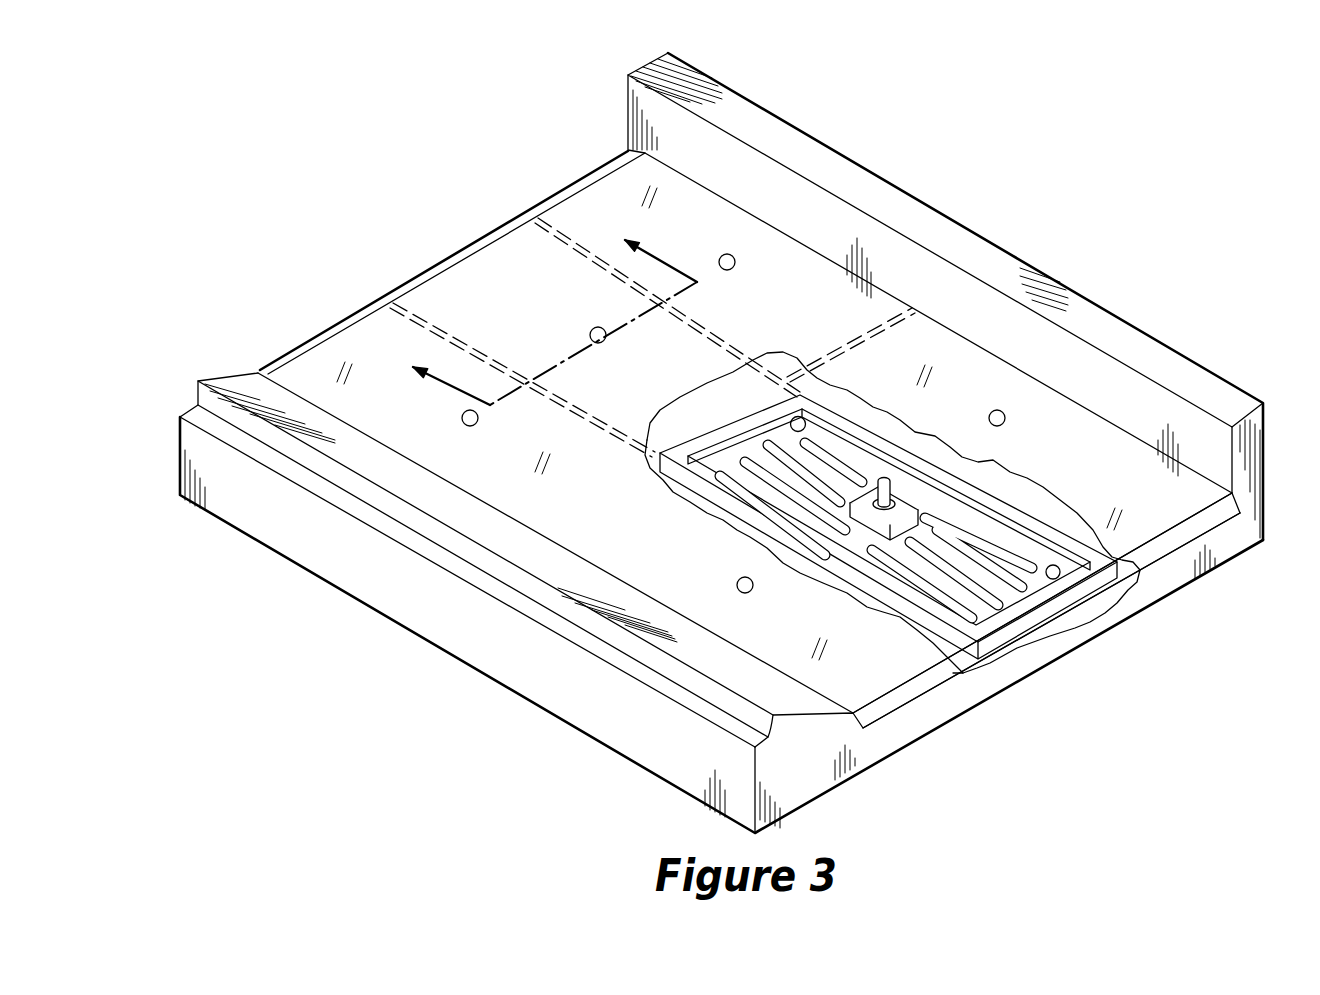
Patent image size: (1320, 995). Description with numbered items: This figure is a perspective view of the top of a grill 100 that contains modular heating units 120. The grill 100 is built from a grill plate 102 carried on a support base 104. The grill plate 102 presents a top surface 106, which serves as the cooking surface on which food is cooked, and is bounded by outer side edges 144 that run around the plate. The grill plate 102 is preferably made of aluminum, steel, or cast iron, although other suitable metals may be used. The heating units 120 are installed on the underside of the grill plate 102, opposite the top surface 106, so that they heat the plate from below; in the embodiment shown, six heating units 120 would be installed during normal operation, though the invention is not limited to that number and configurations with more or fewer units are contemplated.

The grill 100 is at (745, 443).
The grill plate 102 is at (662, 390).
The support base 104 is at (1252, 505).
The top surface 106 is at (612, 197).
The heating unit 120 is at (1068, 615).
The outer side edges 144 is at (450, 272).